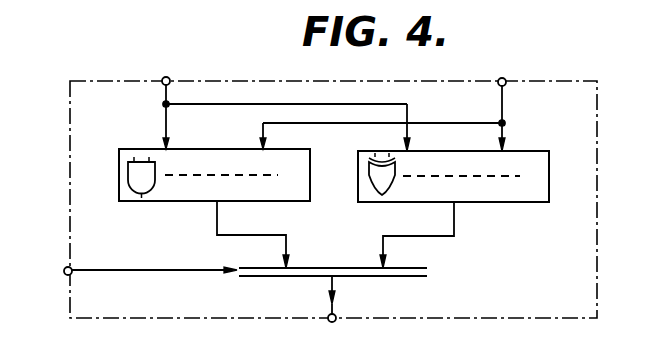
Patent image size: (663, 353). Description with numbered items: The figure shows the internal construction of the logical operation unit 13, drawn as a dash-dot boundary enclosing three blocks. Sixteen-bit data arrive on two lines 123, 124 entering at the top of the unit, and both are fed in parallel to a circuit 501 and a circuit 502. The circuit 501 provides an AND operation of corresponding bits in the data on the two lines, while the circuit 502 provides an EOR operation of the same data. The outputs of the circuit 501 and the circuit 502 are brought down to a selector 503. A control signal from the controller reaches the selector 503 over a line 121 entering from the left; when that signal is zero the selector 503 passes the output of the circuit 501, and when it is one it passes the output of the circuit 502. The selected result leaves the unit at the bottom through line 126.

The logical operation unit 13 is at (607, 200).
The line 121 is at (65, 268).
The line 123 is at (169, 77).
The line 124 is at (505, 78).
The output line 126 is at (334, 322).
The circuit 501 is at (320, 150).
The circuit 502 is at (550, 173).
The selector 503 is at (427, 268).